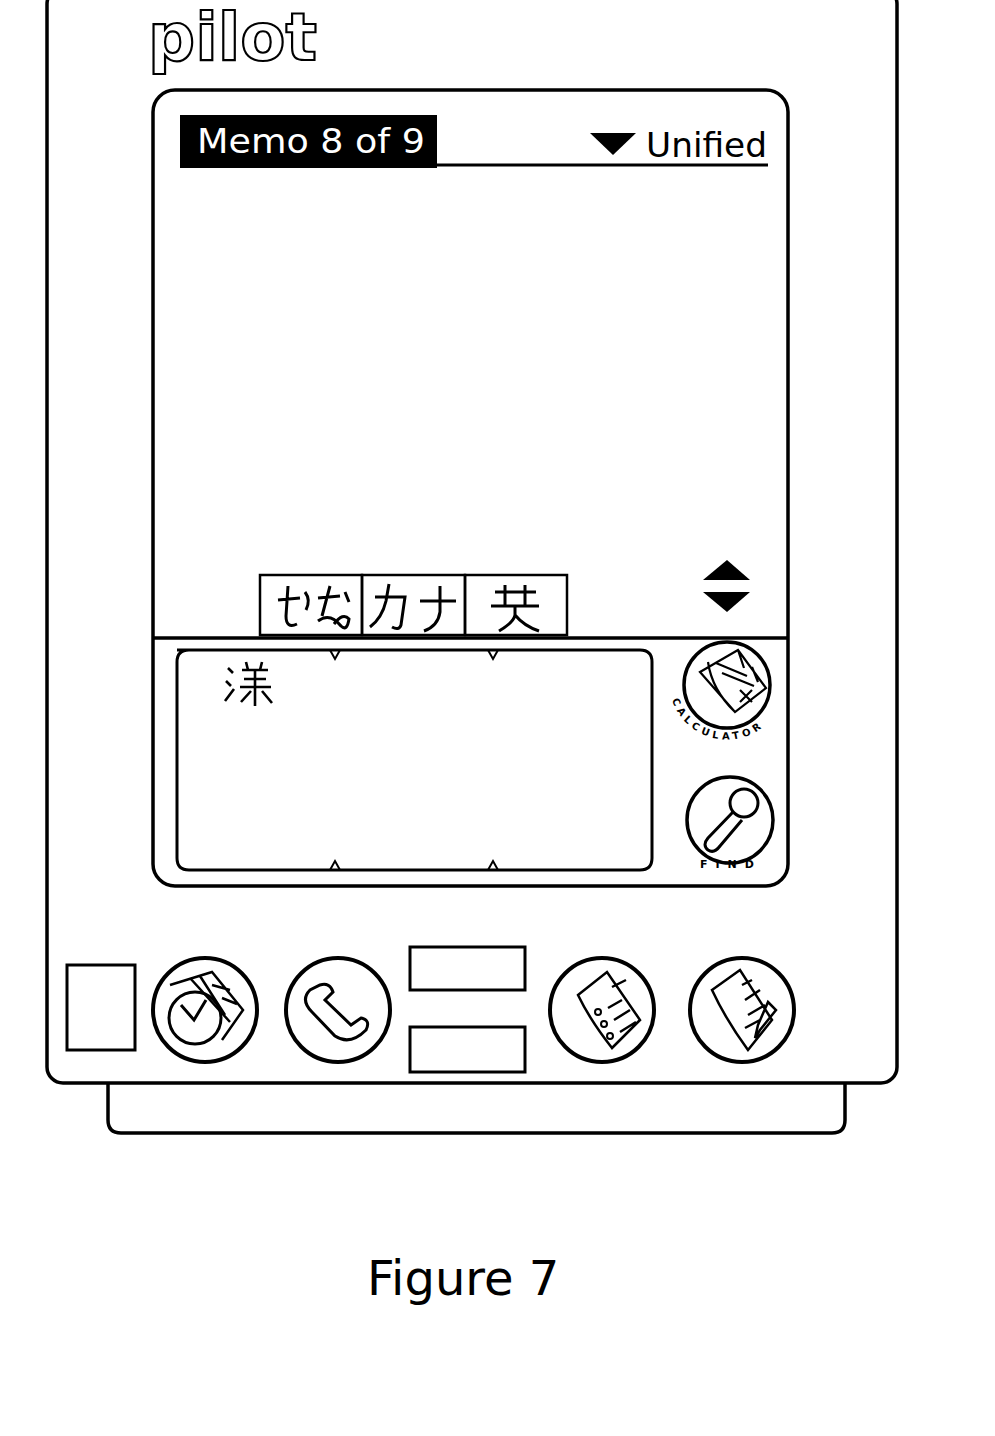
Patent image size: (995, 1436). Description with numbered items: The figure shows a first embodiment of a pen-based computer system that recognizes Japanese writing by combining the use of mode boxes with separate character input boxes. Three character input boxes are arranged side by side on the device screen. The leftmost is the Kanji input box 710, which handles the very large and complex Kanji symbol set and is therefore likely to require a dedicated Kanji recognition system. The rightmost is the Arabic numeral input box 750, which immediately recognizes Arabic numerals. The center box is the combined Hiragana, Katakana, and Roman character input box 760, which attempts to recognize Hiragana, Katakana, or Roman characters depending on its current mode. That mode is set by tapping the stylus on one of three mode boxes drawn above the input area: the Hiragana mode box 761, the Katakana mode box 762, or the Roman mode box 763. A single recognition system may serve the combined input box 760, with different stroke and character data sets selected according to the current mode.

The Kanji input box 710 is at (258, 760).
The Arabic numeral input box 750 is at (572, 760).
The combined Hiragana, Katakana, and Roman character input box 760 is at (416, 760).
The Hiragana mode box 761 is at (308, 575).
The Katakana mode box 762 is at (404, 575).
The Roman mode box 763 is at (515, 575).